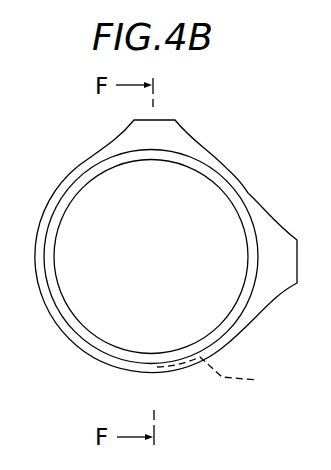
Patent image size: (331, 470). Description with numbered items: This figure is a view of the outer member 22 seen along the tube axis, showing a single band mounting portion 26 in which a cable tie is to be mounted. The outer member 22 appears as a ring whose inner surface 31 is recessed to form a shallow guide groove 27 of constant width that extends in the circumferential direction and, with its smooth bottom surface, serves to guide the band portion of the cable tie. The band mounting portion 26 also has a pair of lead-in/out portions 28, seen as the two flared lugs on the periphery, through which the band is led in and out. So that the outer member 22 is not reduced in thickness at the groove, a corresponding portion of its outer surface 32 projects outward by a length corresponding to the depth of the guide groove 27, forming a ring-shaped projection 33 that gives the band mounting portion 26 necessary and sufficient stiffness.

The outer member 22 is at (72, 167).
The band mounting portion 26 is at (236, 172).
The guide groove 27 is at (221, 375).
The lead-in/out portion 28 is at (169, 137).
The inner surface 31 is at (74, 309).
The outer surface 32 is at (83, 349).
The ring-shaped projection 33 is at (176, 374).